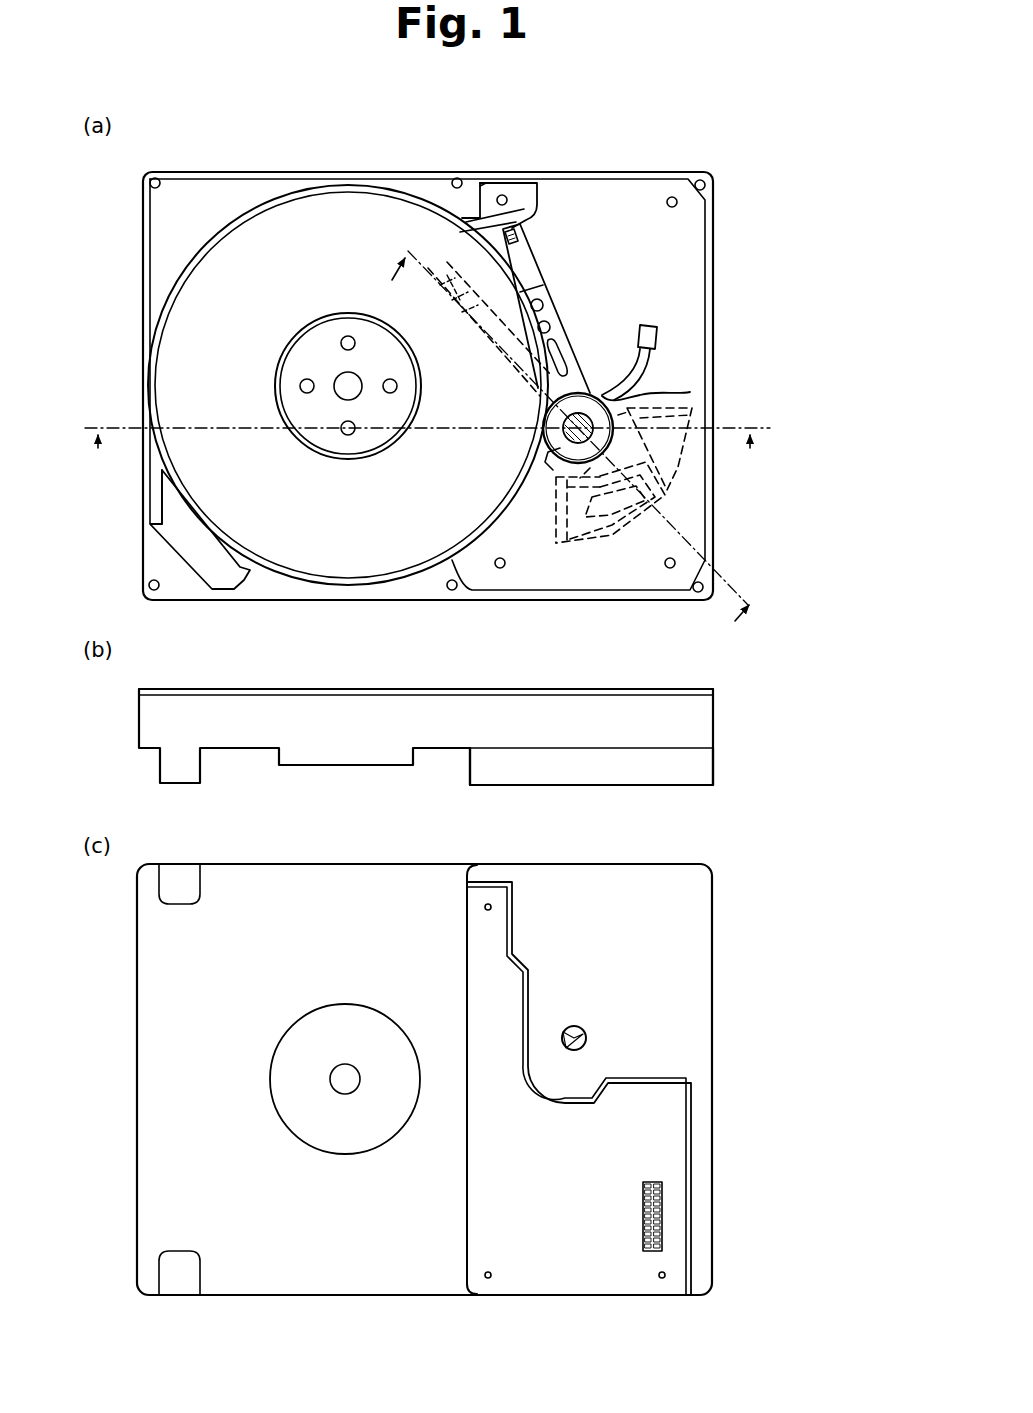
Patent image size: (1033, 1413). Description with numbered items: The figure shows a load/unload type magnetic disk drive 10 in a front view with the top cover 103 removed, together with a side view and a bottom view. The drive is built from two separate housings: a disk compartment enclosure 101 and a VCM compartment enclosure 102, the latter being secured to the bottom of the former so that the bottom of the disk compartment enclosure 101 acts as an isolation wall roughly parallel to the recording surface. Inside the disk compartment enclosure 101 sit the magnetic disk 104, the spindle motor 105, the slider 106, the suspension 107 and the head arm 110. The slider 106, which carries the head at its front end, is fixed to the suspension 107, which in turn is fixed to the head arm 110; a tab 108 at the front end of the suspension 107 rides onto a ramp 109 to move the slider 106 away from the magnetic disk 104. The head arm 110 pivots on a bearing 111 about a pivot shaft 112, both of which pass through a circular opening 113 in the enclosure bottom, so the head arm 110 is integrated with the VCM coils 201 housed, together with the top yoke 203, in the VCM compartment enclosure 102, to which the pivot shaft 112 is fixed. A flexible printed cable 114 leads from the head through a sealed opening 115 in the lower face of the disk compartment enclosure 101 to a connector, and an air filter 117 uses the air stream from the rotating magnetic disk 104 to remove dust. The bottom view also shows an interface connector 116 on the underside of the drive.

The magnetic disk drive 10 is at (736, 189).
The disk compartment enclosure 101 is at (372, 174).
The VCM compartment enclosure 102 is at (700, 762).
The top cover 103 is at (575, 690).
The magnetic disk 104 is at (185, 375).
The spindle motor 105 is at (336, 322).
The slider 106 is at (522, 233).
The suspension 107 is at (535, 275).
The tab 108 is at (540, 185).
The ramp 109 is at (483, 181).
The head arm 110 is at (546, 308).
The bearing 111 is at (615, 410).
The pivot shaft 112 is at (580, 424).
The circular opening 113 is at (553, 462).
The flexible printed cable 114 is at (645, 376).
The opening 115 is at (650, 325).
The interface connector 116 is at (662, 1222).
The air filter 117 is at (165, 517).
The VCM coils 201 is at (653, 490).
The top yoke 203 is at (677, 472).